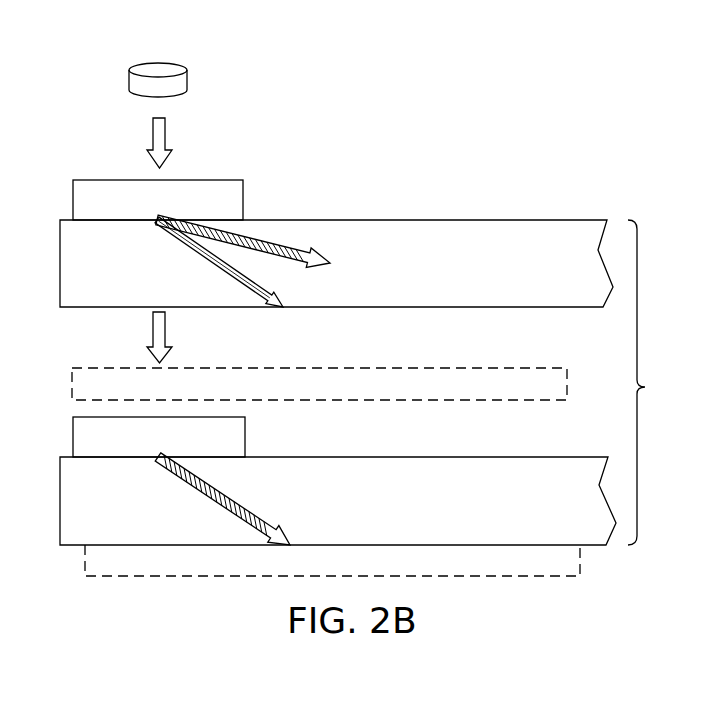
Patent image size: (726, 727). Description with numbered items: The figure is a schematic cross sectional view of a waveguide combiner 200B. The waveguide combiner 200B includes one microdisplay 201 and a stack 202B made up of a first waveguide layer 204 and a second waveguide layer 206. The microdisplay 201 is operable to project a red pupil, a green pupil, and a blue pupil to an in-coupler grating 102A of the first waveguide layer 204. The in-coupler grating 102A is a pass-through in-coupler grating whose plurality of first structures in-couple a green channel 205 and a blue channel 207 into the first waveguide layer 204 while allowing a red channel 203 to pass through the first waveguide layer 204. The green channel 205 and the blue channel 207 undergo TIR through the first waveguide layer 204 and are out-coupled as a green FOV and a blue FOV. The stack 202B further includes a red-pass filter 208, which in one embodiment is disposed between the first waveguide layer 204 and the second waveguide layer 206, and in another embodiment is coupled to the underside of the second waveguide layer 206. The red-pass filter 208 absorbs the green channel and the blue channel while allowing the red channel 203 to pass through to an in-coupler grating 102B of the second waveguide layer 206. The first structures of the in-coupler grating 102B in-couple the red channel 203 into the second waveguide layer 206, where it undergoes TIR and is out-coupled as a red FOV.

The waveguide combiner 200B is at (576, 82).
The microdisplay 201 is at (183, 82).
The in-coupler grating 102A is at (124, 212).
The first waveguide layer 204 is at (421, 276).
The green channel 205 is at (288, 245).
The blue channel 207 is at (213, 265).
The red-pass filter 208 is at (482, 380).
The stack 202B is at (669, 382).
The in-coupler grating 102B is at (124, 448).
The second waveguide layer 206 is at (423, 513).
The red channel 203 is at (256, 513).